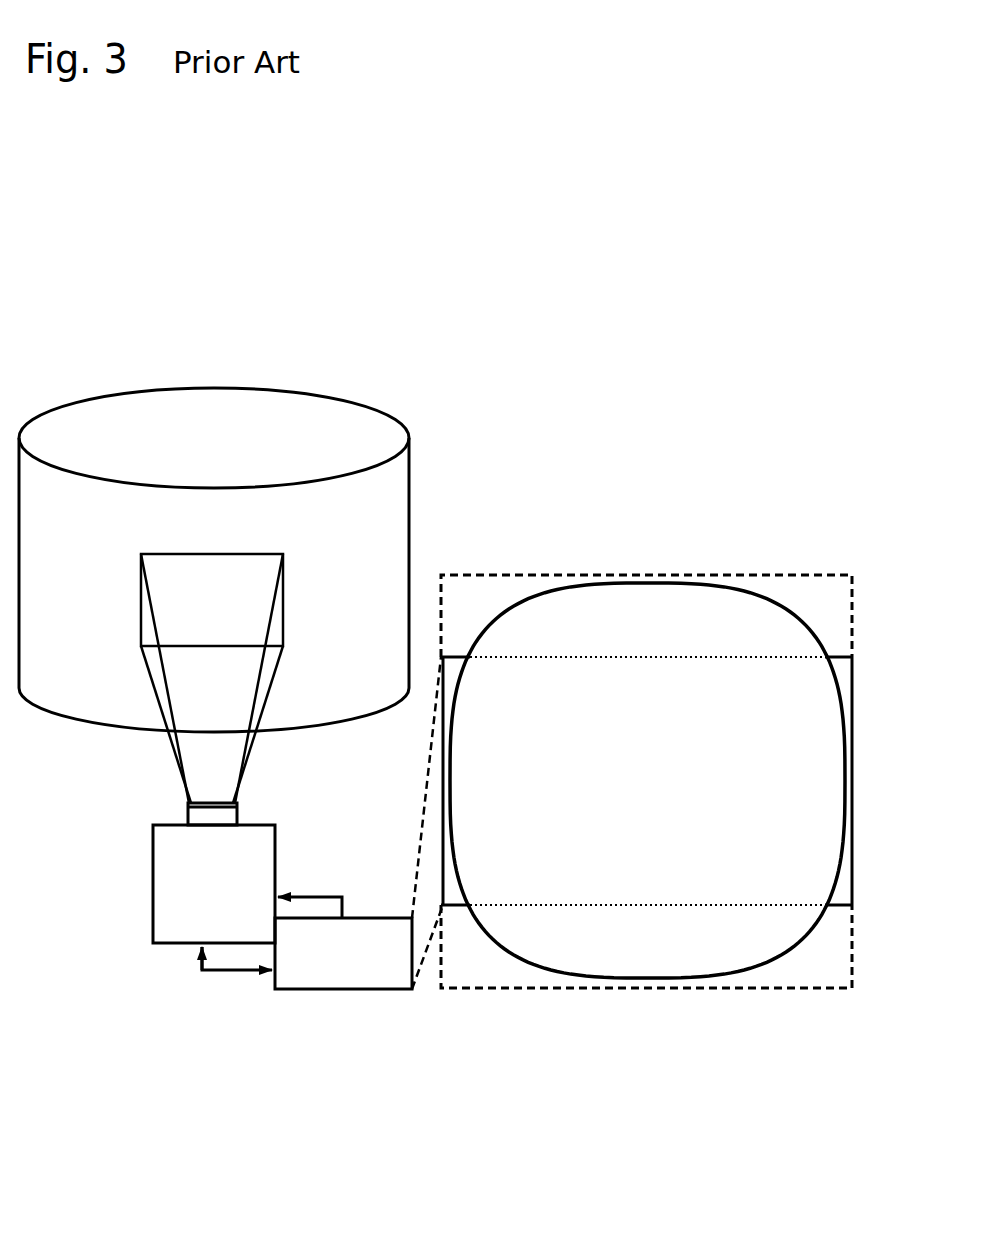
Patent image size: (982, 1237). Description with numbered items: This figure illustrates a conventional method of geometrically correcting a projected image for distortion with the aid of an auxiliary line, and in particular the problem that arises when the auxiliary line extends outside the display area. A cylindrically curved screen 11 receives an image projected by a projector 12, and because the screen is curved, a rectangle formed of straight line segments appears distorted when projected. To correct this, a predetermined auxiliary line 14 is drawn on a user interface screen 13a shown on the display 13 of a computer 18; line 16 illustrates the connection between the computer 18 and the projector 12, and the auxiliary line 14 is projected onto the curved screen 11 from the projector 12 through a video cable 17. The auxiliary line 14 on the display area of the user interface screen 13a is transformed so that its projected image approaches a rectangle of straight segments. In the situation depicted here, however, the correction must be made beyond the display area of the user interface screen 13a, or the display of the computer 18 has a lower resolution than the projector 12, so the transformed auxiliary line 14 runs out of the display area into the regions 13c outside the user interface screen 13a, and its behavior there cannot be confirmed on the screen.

The cylindrically curved screen 11 is at (222, 388).
The projector 12 is at (153, 868).
The display 13 is at (616, 991).
The user interface screen 13a is at (444, 685).
The corner region outside wafer 13c is at (802, 588).
The auxiliary line 14 is at (525, 610).
The line 16 is at (230, 974).
The video cable 17 is at (307, 894).
The computer 18 is at (332, 992).